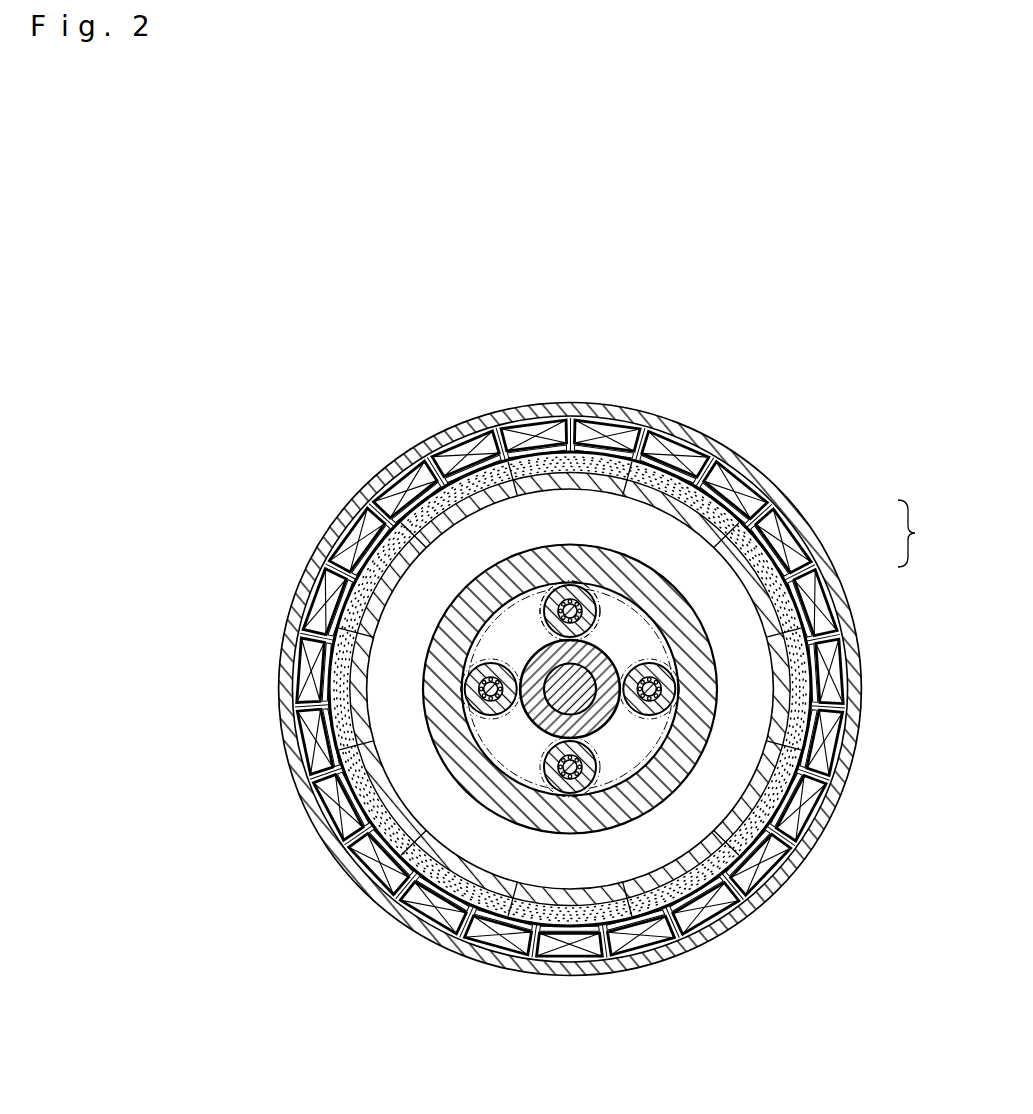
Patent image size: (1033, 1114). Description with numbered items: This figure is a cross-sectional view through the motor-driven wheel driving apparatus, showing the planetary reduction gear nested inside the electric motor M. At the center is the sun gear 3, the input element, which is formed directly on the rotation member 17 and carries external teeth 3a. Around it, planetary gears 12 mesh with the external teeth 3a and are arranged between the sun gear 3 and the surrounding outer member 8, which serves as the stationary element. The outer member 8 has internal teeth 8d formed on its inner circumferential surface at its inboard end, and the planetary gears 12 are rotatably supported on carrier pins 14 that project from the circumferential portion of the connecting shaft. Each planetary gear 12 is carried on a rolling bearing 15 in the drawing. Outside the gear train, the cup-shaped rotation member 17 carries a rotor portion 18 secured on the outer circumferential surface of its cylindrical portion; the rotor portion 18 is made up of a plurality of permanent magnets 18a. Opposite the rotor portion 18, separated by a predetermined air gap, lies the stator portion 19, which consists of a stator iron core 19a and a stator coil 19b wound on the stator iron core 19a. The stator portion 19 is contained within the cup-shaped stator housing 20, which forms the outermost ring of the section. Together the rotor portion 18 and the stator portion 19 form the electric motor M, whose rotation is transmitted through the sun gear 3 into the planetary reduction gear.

The sun gear 3 is at (587, 716).
The external teeth 3a is at (527, 731).
The outer member 8 is at (587, 689).
The internal teeth 8d is at (604, 688).
The planetary gears 12 is at (586, 615).
The carrier pins 14 is at (609, 689).
The ball bearing 15 is at (570, 645).
The rotation member 17 is at (644, 689).
The rotor portion 18 is at (535, 688).
The permanent magnets 18a is at (498, 688).
The stator portion 19 is at (594, 673).
The stator iron core 19a is at (570, 687).
The stator coil 19b is at (570, 672).
The stator housing 20 is at (614, 689).
The electric motor M is at (919, 533).